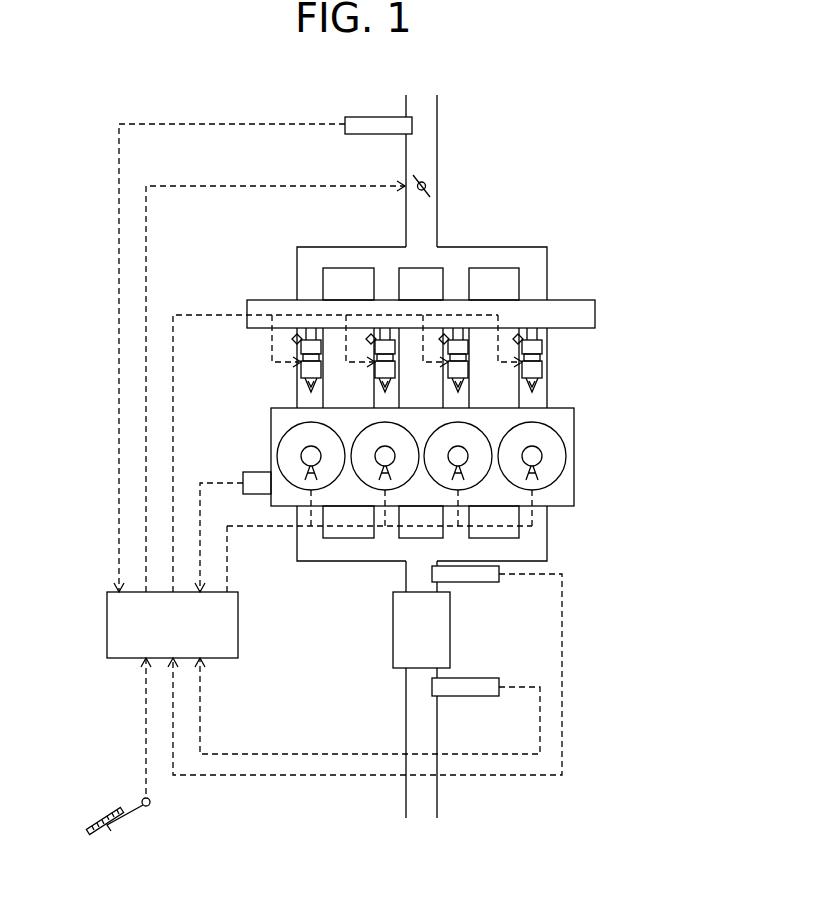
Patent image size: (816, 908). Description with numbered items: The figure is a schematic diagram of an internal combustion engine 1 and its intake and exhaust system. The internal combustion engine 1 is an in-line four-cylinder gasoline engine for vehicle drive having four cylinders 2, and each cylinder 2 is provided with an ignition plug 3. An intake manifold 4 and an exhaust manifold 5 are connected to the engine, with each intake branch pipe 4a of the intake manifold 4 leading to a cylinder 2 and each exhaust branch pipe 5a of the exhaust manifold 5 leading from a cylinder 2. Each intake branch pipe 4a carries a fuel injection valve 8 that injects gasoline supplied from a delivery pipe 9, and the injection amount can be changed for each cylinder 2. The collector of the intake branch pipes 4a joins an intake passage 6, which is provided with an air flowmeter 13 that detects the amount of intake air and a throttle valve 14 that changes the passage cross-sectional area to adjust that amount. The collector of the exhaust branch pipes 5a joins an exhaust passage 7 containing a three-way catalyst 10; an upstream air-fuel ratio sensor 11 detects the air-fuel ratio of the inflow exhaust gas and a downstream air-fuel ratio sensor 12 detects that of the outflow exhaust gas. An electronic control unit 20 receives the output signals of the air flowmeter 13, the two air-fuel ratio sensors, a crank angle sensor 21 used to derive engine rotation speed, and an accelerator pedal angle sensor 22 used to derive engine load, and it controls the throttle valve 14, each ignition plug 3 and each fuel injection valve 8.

The internal combustion engine 1 is at (246, 388).
The cylinder 2 is at (560, 423).
The ignition plug 3 is at (542, 449).
The intake manifold 4 is at (297, 263).
The intake branch pipe 4a is at (547, 285).
The exhaust manifold 5 is at (297, 548).
The exhaust branch pipe 5a is at (547, 523).
The intake passage 6 is at (437, 138).
The exhaust passage 7 is at (406, 694).
The fuel injection valve 8 is at (542, 356).
The delivery pipe 9 is at (595, 313).
The three-way catalyst 10 is at (393, 633).
The upstream air-fuel ratio sensor 11 is at (490, 583).
The downstream air-fuel ratio sensor 12 is at (490, 697).
The air flowmeter 13 is at (357, 117).
The throttle valve 14 is at (426, 186).
The electronic control unit 20 is at (107, 625).
The crank angle sensor 21 is at (250, 470).
The accelerator pedal angle sensor 22 is at (150, 805).